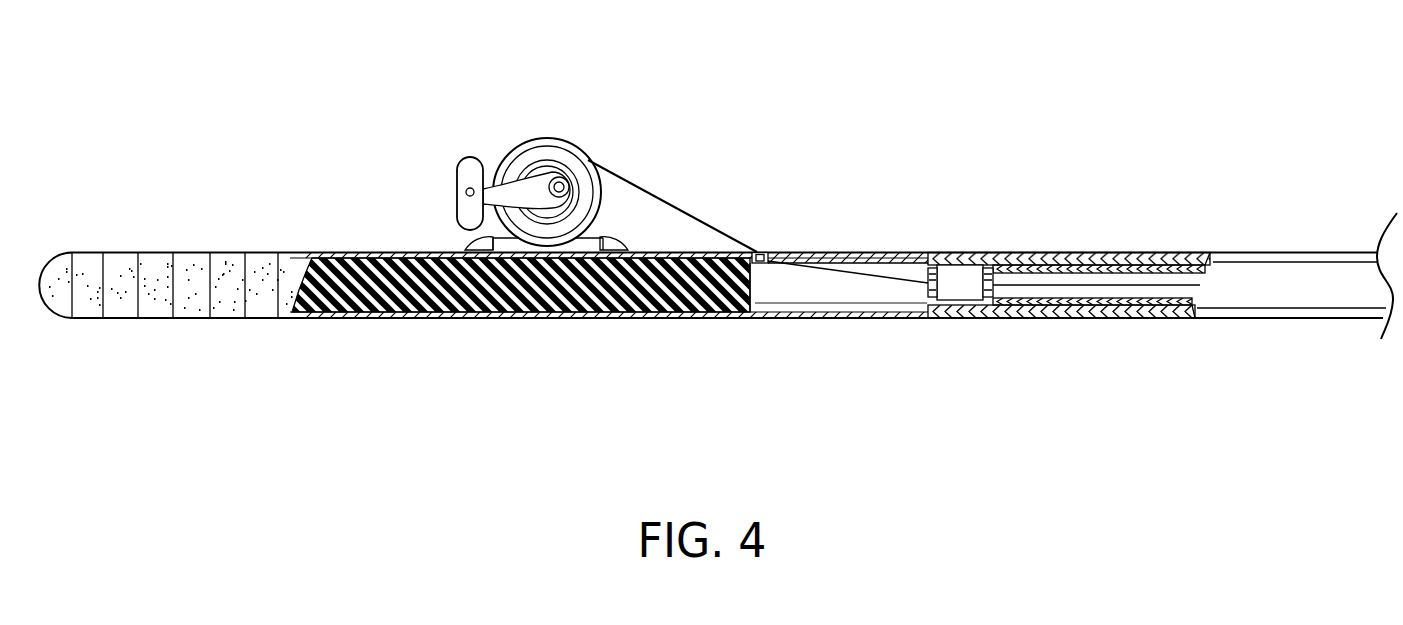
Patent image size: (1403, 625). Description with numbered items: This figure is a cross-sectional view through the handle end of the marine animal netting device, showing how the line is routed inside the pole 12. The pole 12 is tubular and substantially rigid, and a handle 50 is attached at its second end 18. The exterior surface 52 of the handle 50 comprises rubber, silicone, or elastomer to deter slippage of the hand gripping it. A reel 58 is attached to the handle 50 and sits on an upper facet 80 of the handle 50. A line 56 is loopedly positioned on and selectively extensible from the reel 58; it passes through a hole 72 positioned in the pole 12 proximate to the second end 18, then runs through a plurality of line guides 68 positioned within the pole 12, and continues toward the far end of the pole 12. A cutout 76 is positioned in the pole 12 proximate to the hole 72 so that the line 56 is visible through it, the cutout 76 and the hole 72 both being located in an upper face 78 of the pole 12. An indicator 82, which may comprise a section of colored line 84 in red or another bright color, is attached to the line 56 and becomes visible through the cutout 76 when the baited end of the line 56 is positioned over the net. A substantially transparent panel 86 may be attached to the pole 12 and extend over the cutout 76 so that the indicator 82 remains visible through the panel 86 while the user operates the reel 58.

The pole 12 is at (1278, 255).
The second end 18 is at (748, 318).
The handle 50 is at (191, 318).
The exterior surface 52 is at (185, 278).
The line 56 is at (658, 196).
The reel 58 is at (550, 137).
The line guides 68 is at (989, 290).
The hole 72 is at (766, 252).
The cutout 76 is at (798, 252).
The upper face 78 is at (960, 252).
The upper facet 80 is at (272, 253).
The indicator 82 is at (837, 273).
The section of colored line 84 is at (907, 278).
The panel 86 is at (877, 252).